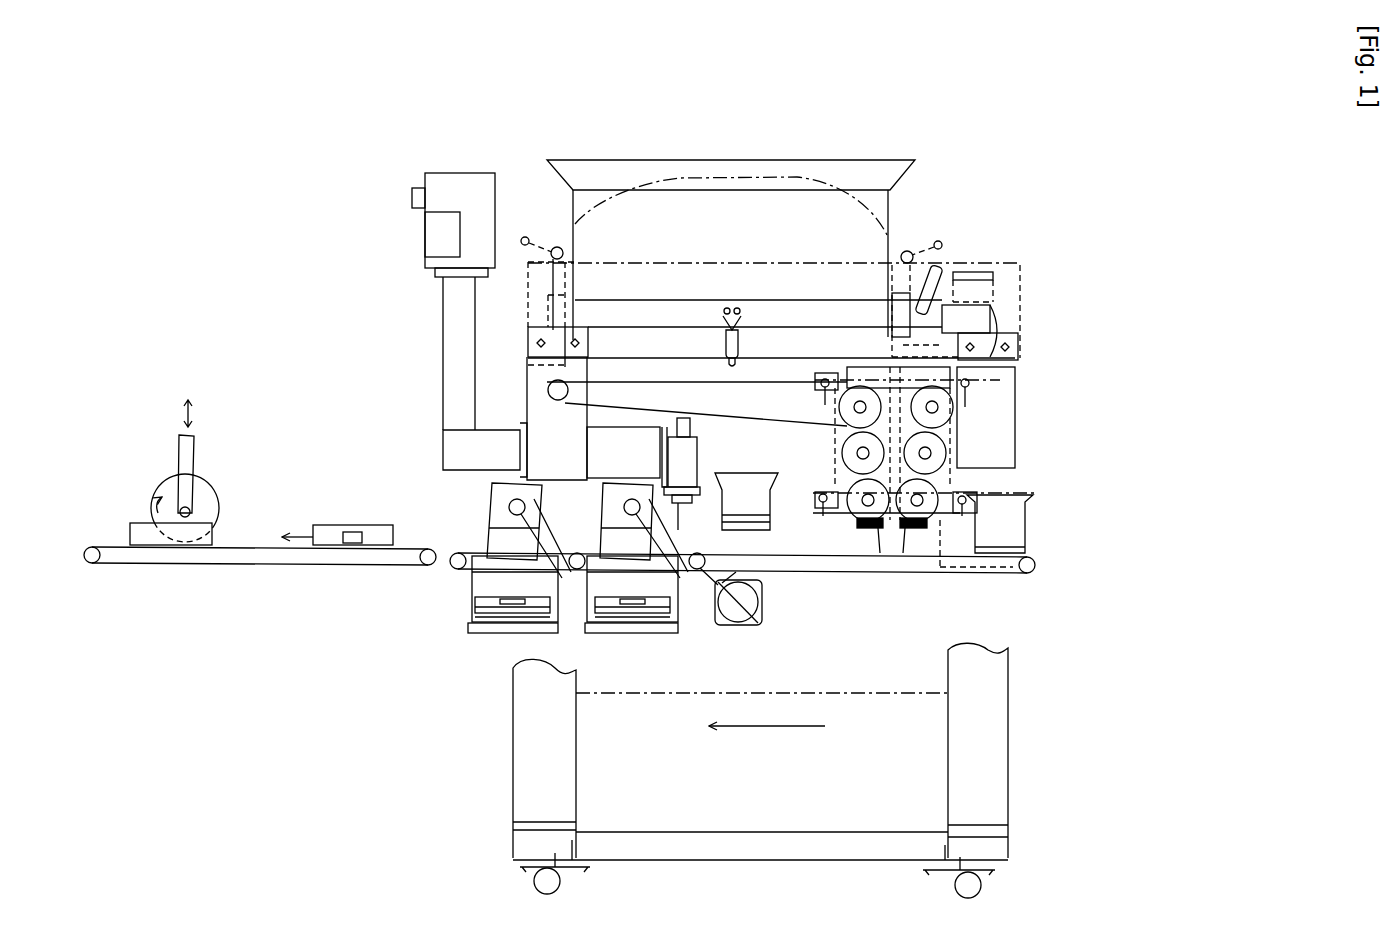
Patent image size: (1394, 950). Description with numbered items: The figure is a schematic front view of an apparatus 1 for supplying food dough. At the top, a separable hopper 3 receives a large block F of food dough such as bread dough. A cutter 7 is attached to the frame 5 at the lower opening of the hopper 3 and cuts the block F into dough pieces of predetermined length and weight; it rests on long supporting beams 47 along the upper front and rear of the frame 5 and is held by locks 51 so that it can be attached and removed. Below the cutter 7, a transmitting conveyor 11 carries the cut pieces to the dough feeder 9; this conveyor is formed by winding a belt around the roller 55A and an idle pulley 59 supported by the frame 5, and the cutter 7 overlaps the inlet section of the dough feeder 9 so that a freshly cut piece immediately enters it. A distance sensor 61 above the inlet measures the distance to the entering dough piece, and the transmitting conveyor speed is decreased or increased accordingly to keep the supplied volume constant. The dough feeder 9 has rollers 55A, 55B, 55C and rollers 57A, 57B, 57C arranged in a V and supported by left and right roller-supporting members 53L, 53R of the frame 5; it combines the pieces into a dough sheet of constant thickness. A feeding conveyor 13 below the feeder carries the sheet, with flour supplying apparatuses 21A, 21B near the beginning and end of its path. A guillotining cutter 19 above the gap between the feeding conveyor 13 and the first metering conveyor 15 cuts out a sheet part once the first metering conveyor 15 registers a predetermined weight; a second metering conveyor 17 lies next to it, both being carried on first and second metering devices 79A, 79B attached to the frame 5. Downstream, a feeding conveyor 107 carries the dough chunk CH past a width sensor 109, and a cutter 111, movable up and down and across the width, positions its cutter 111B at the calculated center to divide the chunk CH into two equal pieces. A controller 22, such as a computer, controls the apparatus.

The apparatus for supplying food dough 1 is at (1013, 152).
The hopper 3 is at (848, 163).
The frame 5 is at (1012, 690).
The cutter 7 is at (975, 268).
The dough feeder 9 is at (976, 433).
The transmitting conveyor 11 is at (746, 484).
The feeding conveyor 13 is at (853, 573).
The first metering conveyor 15 is at (593, 508).
The second metering conveyor 17 is at (446, 522).
The guillotining cutter 19 is at (697, 448).
The supplying apparatus 21A is at (1027, 530).
The supplying apparatus 21B is at (757, 512).
The controller 22 is at (473, 185).
The supporting beam 47 is at (630, 337).
The lock 51 is at (752, 312).
The left roller-supporting member 53L is at (835, 518).
The right roller-supporting member 53R is at (950, 480).
The roller 55A is at (868, 390).
The roller 55B is at (836, 455).
The roller 55C is at (883, 520).
The roller 57A is at (952, 370).
The roller 57B is at (950, 452).
The roller 57C is at (958, 563).
The idle pulley 59 is at (525, 387).
The distance sensor 61 is at (1020, 295).
The first metering device 79A is at (636, 637).
The second metering device 79B is at (493, 635).
The feeding conveyor 107 is at (255, 568).
The width sensor 109 is at (352, 547).
The cutter 111 is at (163, 473).
The cutter 111B is at (210, 482).
The large block of food dough F is at (717, 160).
The dough chunk CH is at (213, 512).